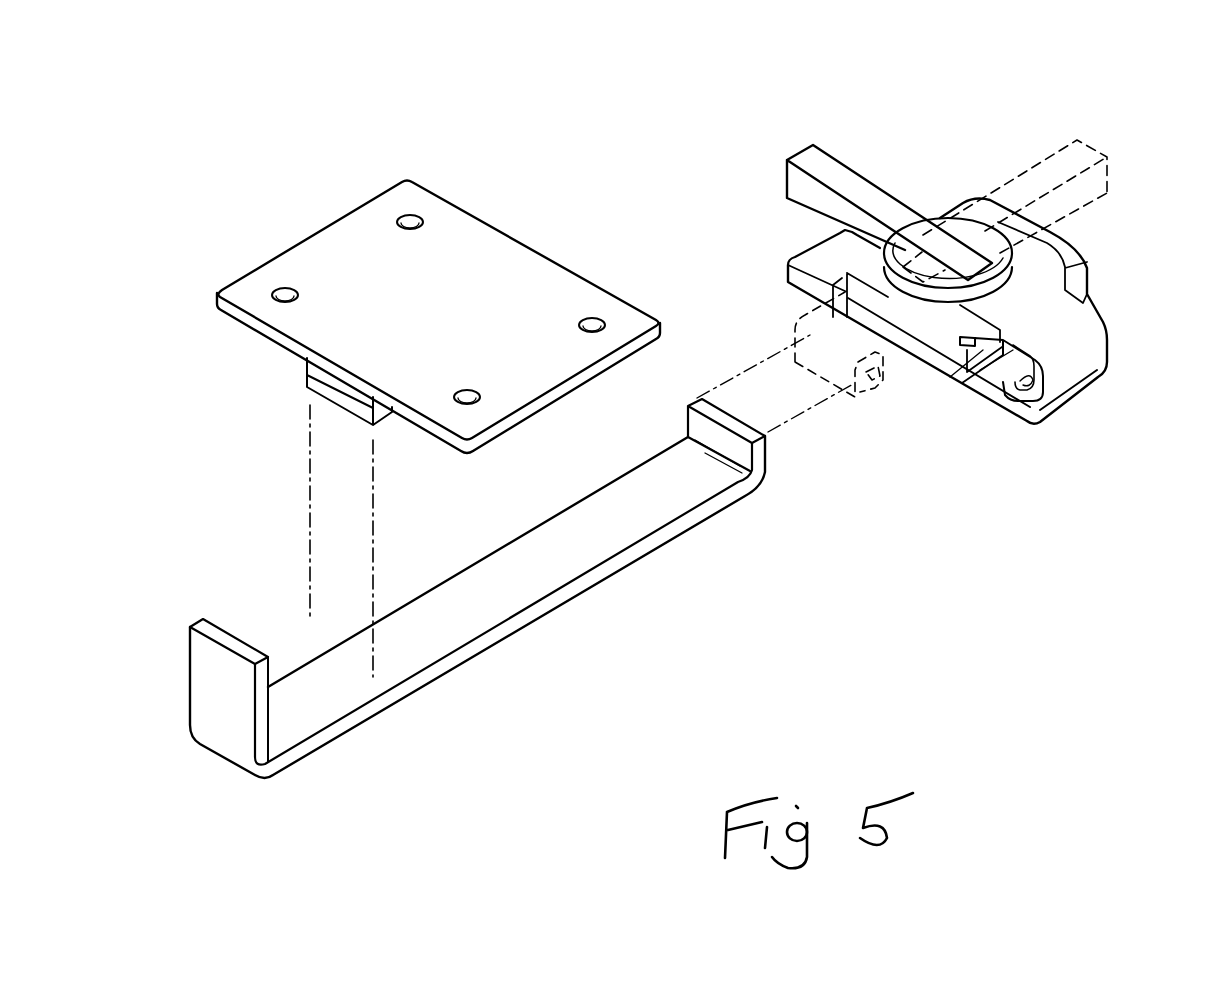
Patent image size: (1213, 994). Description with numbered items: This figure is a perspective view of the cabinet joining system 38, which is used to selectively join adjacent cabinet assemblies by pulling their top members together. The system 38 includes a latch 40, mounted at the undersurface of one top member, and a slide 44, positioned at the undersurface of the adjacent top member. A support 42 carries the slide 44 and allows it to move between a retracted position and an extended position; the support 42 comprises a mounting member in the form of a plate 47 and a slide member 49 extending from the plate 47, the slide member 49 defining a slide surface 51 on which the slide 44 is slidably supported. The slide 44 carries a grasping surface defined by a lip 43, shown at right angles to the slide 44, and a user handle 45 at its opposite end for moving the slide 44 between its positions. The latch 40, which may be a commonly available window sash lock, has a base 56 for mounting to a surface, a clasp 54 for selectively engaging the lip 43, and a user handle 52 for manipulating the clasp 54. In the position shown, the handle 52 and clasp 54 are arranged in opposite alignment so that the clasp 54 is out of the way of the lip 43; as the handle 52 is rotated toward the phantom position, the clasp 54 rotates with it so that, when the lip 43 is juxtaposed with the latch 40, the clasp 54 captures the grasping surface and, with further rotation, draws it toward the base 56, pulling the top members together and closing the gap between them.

The cabinet joining system 38 is at (627, 140).
The latch 40 is at (800, 245).
The support 42 is at (351, 197).
The lip 43 is at (753, 430).
The slide 44 is at (560, 611).
The user handle 45 is at (236, 632).
The plate 47 is at (460, 201).
The slide member 49 is at (306, 372).
The slide surface 51 is at (352, 418).
The user handle 52 is at (817, 147).
The clasp 54 is at (1058, 373).
The base 56 is at (805, 298).